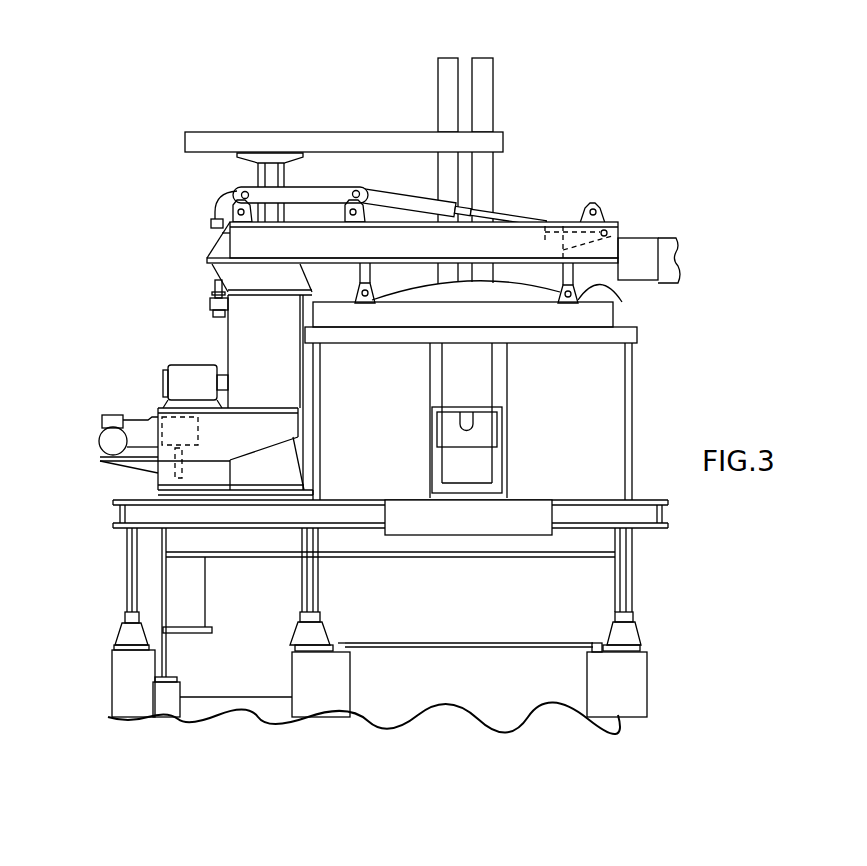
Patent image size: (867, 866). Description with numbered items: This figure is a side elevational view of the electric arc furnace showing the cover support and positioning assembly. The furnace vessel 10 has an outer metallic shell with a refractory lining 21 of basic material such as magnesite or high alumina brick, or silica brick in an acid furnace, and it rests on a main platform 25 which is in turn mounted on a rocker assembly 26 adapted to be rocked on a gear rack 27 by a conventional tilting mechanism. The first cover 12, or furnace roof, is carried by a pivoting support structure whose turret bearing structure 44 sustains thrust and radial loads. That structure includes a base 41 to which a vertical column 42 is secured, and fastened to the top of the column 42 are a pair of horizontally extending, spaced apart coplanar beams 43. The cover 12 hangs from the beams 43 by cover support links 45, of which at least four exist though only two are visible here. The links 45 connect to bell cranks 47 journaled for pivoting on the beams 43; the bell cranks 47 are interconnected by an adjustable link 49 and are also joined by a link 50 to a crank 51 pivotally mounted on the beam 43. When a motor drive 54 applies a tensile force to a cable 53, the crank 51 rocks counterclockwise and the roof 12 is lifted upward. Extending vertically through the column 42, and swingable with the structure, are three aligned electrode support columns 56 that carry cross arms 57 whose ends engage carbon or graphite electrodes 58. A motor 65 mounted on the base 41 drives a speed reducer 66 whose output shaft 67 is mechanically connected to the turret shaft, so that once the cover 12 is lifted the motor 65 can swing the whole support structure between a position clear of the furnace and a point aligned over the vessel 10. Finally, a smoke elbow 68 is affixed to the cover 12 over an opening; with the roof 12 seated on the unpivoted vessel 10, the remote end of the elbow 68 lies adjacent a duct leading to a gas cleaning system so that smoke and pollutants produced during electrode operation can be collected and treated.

The furnace vessel 10 is at (663, 410).
The first cover 12 is at (403, 263).
The refractory lining 21 is at (125, 618).
The main platform 25 is at (647, 512).
The rocker assembly 26 is at (125, 565).
The gear rack 27 is at (320, 615).
The base 41 is at (300, 457).
The vertical column 42 is at (246, 359).
The beams 43 is at (547, 232).
The turret bearing structure 44 is at (192, 588).
The cover support links 45 is at (358, 278).
The bell cranks 47 is at (370, 205).
The adjustable link 49 is at (509, 213).
The link 50 is at (318, 193).
The crank 51 is at (231, 193).
The cable 53 is at (214, 211).
The motor drive 54 is at (209, 309).
The electrode support columns 56 is at (255, 167).
The cross arms 57 is at (371, 138).
The electrodes 58 is at (450, 58).
The motor 65 is at (135, 416).
The speed reducer 66 is at (199, 432).
The output shaft 67 is at (183, 470).
The smoke elbow 68 is at (640, 272).